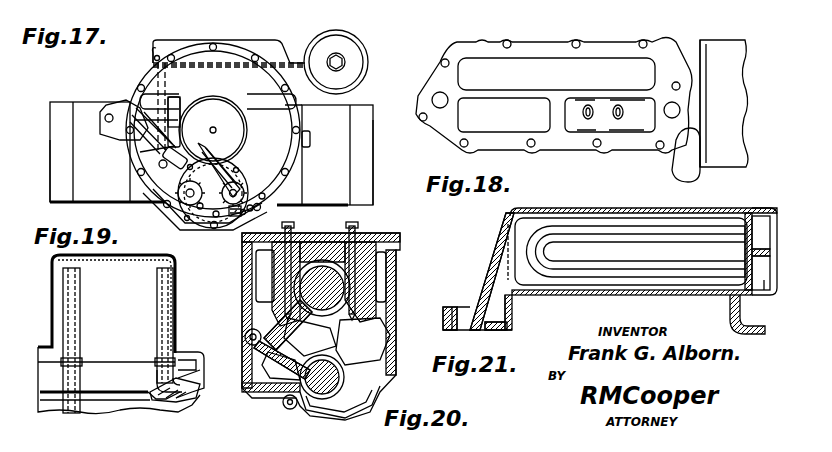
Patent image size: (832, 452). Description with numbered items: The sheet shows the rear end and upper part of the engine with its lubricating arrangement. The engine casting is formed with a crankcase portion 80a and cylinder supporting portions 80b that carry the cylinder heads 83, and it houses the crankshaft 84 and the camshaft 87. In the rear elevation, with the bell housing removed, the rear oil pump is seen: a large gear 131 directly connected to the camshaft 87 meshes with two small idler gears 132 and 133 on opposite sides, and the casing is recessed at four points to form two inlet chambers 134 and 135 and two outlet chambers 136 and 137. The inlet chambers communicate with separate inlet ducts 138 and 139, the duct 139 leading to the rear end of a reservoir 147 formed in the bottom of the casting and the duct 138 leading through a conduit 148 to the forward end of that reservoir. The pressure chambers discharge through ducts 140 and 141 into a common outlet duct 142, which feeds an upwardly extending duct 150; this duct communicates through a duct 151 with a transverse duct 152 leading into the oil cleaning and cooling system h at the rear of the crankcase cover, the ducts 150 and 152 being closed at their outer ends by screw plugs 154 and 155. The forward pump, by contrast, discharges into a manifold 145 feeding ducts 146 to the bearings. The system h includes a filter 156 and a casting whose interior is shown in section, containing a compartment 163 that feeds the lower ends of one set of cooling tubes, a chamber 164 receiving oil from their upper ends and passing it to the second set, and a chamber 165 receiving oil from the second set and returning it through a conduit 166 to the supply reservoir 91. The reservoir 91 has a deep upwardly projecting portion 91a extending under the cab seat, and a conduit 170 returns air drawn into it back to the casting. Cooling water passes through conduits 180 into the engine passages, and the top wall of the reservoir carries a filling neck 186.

In FIG. 20, the crankcase portion 80a is at (270, 398).
In FIG. 17, the cylinder supporting portions 80b is at (88, 108).
In FIG. 17, the cylinder heads 83 is at (56, 174).
In FIG. 20, the crankshaft 84 is at (328, 314).
In FIG. 20, the camshaft 87 is at (340, 366).
In FIG. 19, the supply reservoir 91 is at (44, 346).
In FIG. 19, the upwardly projecting portion 91a is at (178, 258).
In FIG. 17, the large gear 131 is at (230, 162).
In FIG. 17, the small idler gear 132 is at (146, 194).
In FIG. 17, the small idler gear 133 is at (244, 182).
In FIG. 17, the inlet chamber 134 is at (186, 206).
In FIG. 17, the inlet chamber 135 is at (236, 182).
In FIG. 17, the outlet chamber 136 is at (199, 158).
In FIG. 17, the outlet chamber 137 is at (264, 199).
In FIG. 20, the outlet chamber 137 is at (300, 226).
In FIG. 17, the inlet duct 138 is at (186, 208).
In FIG. 17, the inlet duct 139 is at (240, 172).
In FIG. 17, the duct 140 is at (178, 167).
In FIG. 17, the duct 141 is at (268, 208).
In FIG. 20, the duct 141 is at (284, 222).
In FIG. 17, the common outlet duct 142 is at (210, 219).
In FIG. 20, the manifold 145 is at (246, 340).
In FIG. 20, the ducts 146 is at (282, 324).
In FIG. 20, the reservoir 147 is at (342, 412).
In FIG. 20, the conduit 148 is at (284, 406).
In FIG. 17, the upwardly extending duct 150 is at (140, 153).
In FIG. 21, the upwardly extending duct 150 is at (650, 274).
In FIG. 17, the duct 151 is at (166, 80).
In FIG. 17, the transverse duct 152 is at (220, 66).
In FIG. 17, the screw plug 154 is at (122, 104).
In FIG. 17, the screw plug 155 is at (153, 62).
In FIG. 17, the filter 156 is at (356, 52).
In FIG. 18, the filter 156 is at (738, 74).
In FIG. 18, the compartment 163 is at (636, 128).
In FIG. 18, the chamber 164 is at (604, 70).
In FIG. 21, the chamber 164 is at (774, 220).
In FIG. 18, the chamber 165 is at (500, 124).
In FIG. 21, the chamber 165 is at (762, 295).
In FIG. 18, the conduit 166 is at (438, 108).
In FIG. 19, the conduit 166 is at (158, 326).
In FIG. 19, the conduit 170 is at (66, 270).
In FIG. 19, the conduits 180 is at (170, 400).
In FIG. 21, the filling neck 186 is at (504, 304).
In FIG. 19, the oil cleaning and cooling system h is at (204, 354).